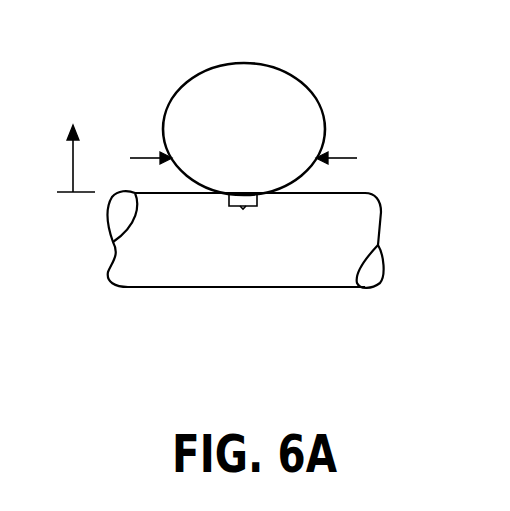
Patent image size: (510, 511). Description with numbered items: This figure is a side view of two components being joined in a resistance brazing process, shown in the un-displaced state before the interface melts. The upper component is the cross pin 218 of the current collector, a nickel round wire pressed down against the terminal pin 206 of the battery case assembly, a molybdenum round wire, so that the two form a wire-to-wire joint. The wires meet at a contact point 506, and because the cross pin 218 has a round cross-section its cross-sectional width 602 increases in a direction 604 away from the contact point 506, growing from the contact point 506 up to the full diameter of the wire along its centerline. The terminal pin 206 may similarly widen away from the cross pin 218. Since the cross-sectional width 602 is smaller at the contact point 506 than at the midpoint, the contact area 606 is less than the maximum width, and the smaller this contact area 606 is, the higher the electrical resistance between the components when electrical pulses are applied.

The cross pin 218 is at (250, 93).
The terminal pin 206 is at (300, 277).
The contact point 506 is at (232, 198).
The contact area 606 is at (243, 208).
The cross-sectional width 602 is at (349, 153).
The direction 604 is at (76, 144).